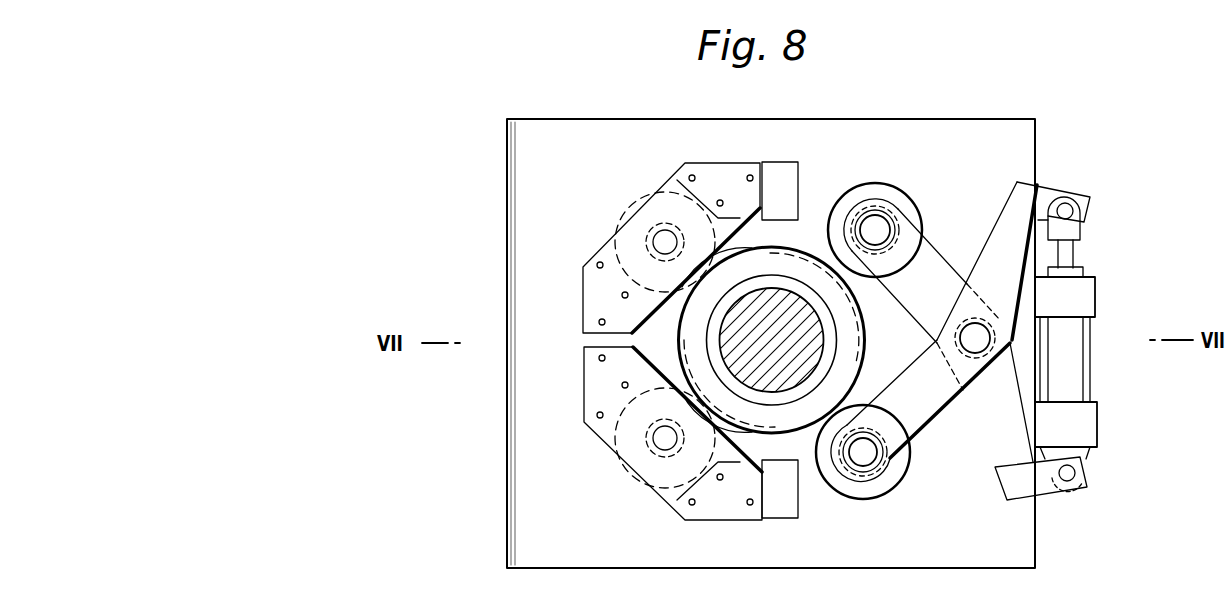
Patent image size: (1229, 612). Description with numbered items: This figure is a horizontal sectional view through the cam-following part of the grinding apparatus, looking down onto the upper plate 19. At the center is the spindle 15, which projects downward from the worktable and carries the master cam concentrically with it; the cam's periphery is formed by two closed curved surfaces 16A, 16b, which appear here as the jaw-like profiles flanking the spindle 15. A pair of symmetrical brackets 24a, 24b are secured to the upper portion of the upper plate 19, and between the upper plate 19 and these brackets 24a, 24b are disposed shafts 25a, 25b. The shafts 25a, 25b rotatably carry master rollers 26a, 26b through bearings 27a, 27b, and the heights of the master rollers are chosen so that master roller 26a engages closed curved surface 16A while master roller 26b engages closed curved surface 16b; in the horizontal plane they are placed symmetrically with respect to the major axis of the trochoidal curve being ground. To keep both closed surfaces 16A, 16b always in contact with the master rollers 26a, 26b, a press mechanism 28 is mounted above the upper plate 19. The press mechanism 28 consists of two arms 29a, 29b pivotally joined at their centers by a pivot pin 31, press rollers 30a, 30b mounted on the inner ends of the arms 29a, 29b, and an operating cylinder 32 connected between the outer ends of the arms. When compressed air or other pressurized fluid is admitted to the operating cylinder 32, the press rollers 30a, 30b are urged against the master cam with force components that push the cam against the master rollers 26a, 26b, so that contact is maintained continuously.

The spindle 15 is at (813, 337).
The closed curved surface 16A is at (750, 248).
The closed curved surface 16b is at (742, 432).
The upper plate 19 is at (788, 550).
The bracket 24a is at (600, 247).
The bracket 24b is at (595, 379).
The shaft 25a is at (663, 230).
The shaft 25b is at (660, 450).
The master roller 26a is at (625, 217).
The master roller 26b is at (630, 478).
The bearing 27a is at (643, 249).
The bearing 27b is at (642, 440).
The press mechanism 28 is at (927, 288).
The arm 29a is at (924, 437).
The arm 29b is at (933, 250).
The press roller 30a is at (865, 500).
The press roller 30b is at (873, 186).
The pivot pin 31 is at (978, 357).
The operating cylinder 32 is at (1088, 297).